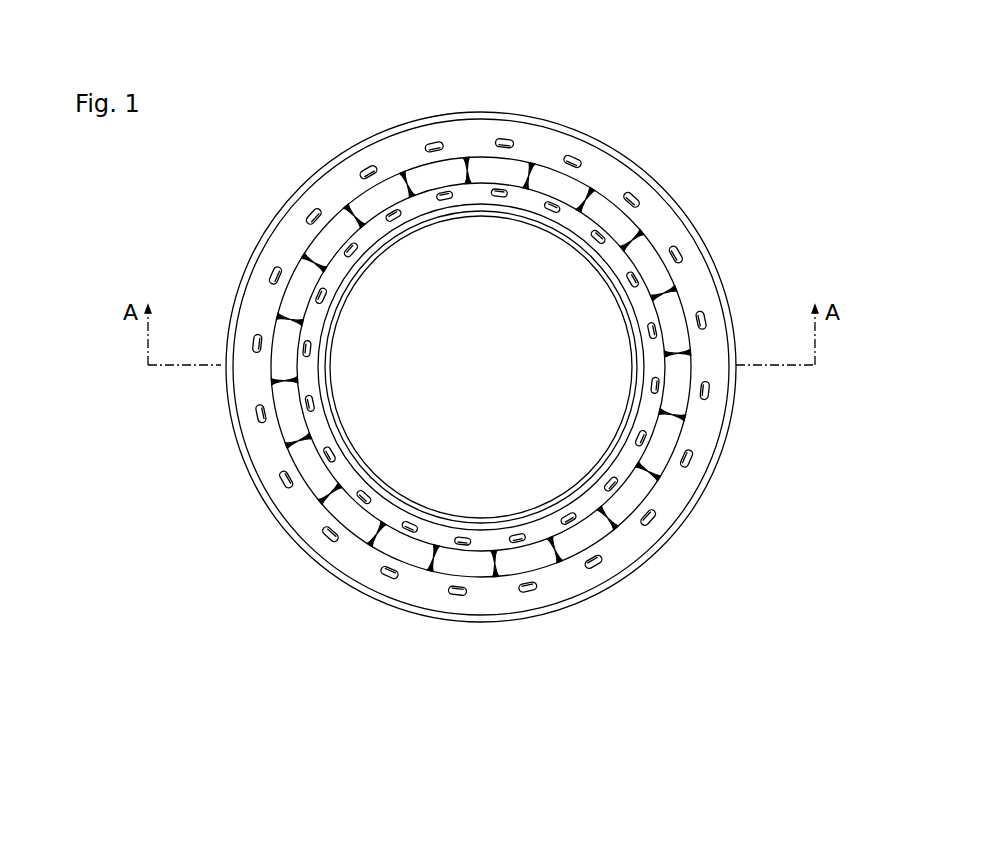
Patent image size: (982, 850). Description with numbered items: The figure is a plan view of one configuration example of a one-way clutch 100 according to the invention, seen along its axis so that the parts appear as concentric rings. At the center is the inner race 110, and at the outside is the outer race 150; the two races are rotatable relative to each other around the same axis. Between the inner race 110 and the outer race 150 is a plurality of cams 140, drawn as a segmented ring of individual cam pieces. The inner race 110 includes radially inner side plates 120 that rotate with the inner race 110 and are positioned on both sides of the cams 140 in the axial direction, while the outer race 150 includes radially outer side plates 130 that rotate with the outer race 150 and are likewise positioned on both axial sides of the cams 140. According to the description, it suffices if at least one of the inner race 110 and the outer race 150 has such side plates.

The one-way clutch 100 is at (502, 388).
The inner race 110 is at (604, 264).
The radially inner side plates 120 is at (340, 465).
The radially outer side plates 130 is at (672, 507).
The cams 140 is at (367, 200).
The outer race 150 is at (695, 222).